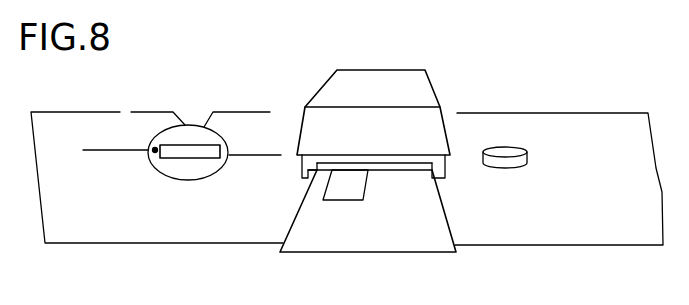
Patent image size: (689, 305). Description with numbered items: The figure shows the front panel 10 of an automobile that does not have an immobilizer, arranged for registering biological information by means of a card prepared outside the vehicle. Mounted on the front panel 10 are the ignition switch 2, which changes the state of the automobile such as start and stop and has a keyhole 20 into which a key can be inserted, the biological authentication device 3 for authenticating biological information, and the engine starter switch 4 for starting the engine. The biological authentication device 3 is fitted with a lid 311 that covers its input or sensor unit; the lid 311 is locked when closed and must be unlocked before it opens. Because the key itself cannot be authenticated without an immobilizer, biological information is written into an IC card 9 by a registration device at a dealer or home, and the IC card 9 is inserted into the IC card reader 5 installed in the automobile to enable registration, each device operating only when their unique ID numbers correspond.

The front panel 10 is at (606, 133).
The ignition switch 2 is at (187, 177).
The keyhole 20 is at (193, 146).
The lid 311 is at (413, 78).
The biological authentication device 3 is at (447, 170).
The IC card reader 5 is at (303, 172).
The IC card 9 is at (409, 230).
The engine starter switch 4 is at (500, 170).